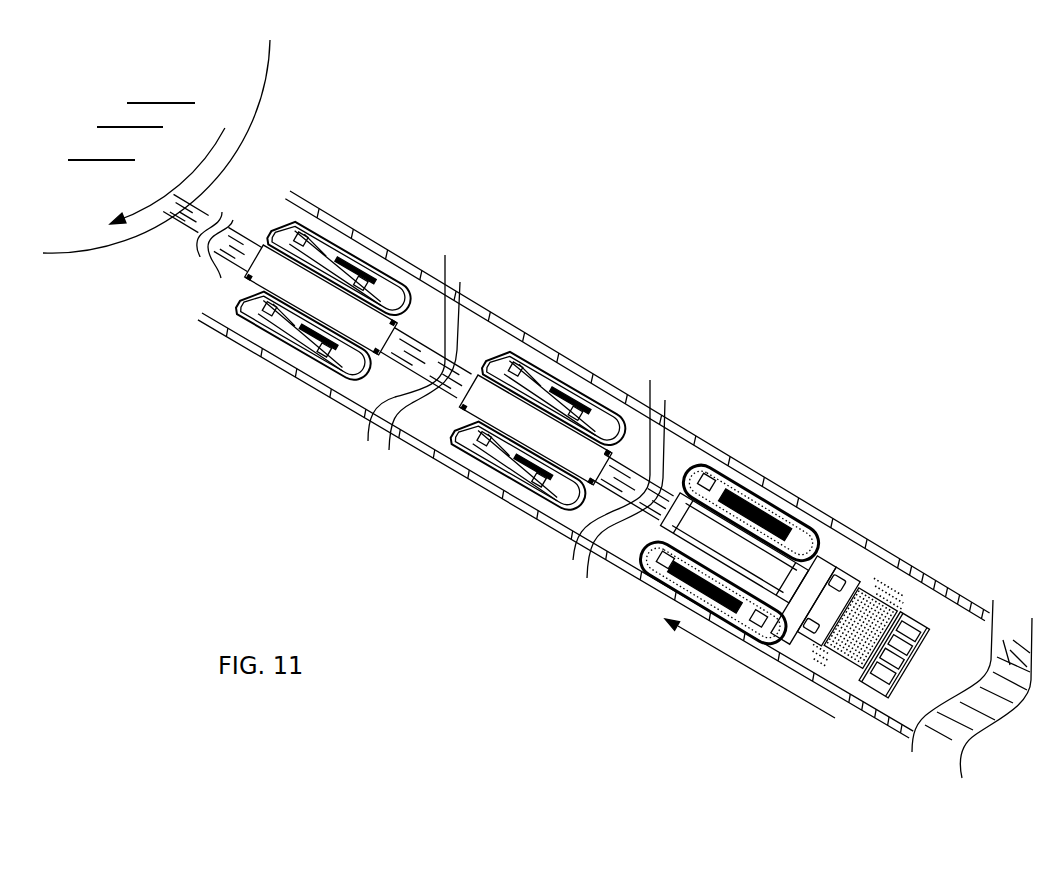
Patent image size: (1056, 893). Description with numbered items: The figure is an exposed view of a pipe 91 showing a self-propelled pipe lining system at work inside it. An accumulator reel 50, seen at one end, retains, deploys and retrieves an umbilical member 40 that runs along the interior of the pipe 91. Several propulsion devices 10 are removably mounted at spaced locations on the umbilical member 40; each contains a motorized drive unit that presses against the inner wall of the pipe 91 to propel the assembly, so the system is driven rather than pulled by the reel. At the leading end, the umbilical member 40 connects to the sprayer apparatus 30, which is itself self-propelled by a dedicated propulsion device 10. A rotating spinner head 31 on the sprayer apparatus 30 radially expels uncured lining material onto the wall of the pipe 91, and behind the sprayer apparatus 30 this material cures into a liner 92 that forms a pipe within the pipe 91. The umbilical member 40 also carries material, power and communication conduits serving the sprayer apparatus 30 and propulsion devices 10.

The propulsion device 10 is at (398, 275).
The sprayer apparatus 30 is at (850, 546).
The spinner head 31 is at (910, 578).
The umbilical member 40 is at (223, 268).
The accumulator reel 50 is at (253, 87).
The pipe 91 is at (502, 328).
The liner 92 is at (968, 604).